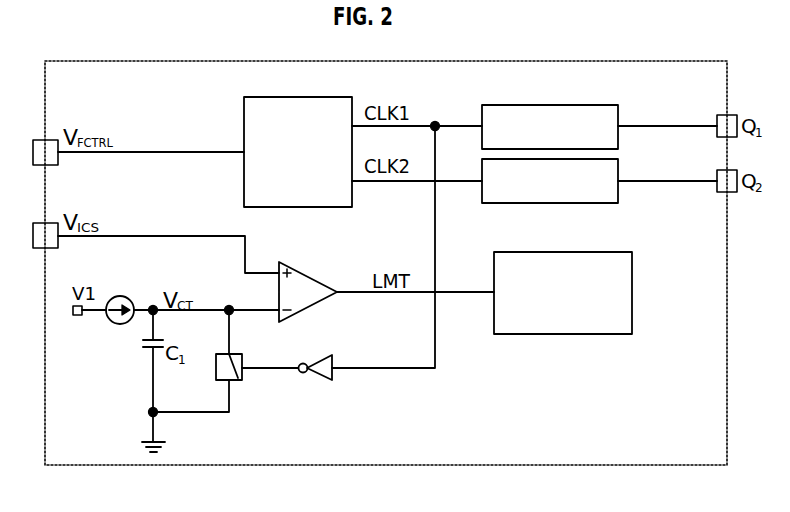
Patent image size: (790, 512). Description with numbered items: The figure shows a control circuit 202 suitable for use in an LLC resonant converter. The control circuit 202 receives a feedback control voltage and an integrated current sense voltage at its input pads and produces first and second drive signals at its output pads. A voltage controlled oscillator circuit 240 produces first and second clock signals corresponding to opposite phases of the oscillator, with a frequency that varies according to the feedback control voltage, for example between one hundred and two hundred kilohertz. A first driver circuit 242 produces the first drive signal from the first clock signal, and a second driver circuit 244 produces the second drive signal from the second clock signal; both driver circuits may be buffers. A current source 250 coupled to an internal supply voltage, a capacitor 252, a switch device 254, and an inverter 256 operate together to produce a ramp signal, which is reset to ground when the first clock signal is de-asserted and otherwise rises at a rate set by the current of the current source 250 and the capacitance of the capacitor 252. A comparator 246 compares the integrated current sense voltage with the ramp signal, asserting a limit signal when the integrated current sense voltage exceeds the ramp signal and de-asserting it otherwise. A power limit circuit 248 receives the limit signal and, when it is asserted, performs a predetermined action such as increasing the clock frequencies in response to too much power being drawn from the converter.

The control circuit 202 is at (190, 61).
The voltage controlled oscillator circuit 240 is at (244, 112).
The first driver circuit 242 is at (548, 105).
The second driver circuit 244 is at (557, 203).
The comparator 246 is at (312, 304).
The power limit circuit 248 is at (565, 334).
The current source 250 is at (119, 296).
The capacitor 252 is at (143, 346).
The switch device 254 is at (242, 380).
The inverter 256 is at (332, 380).